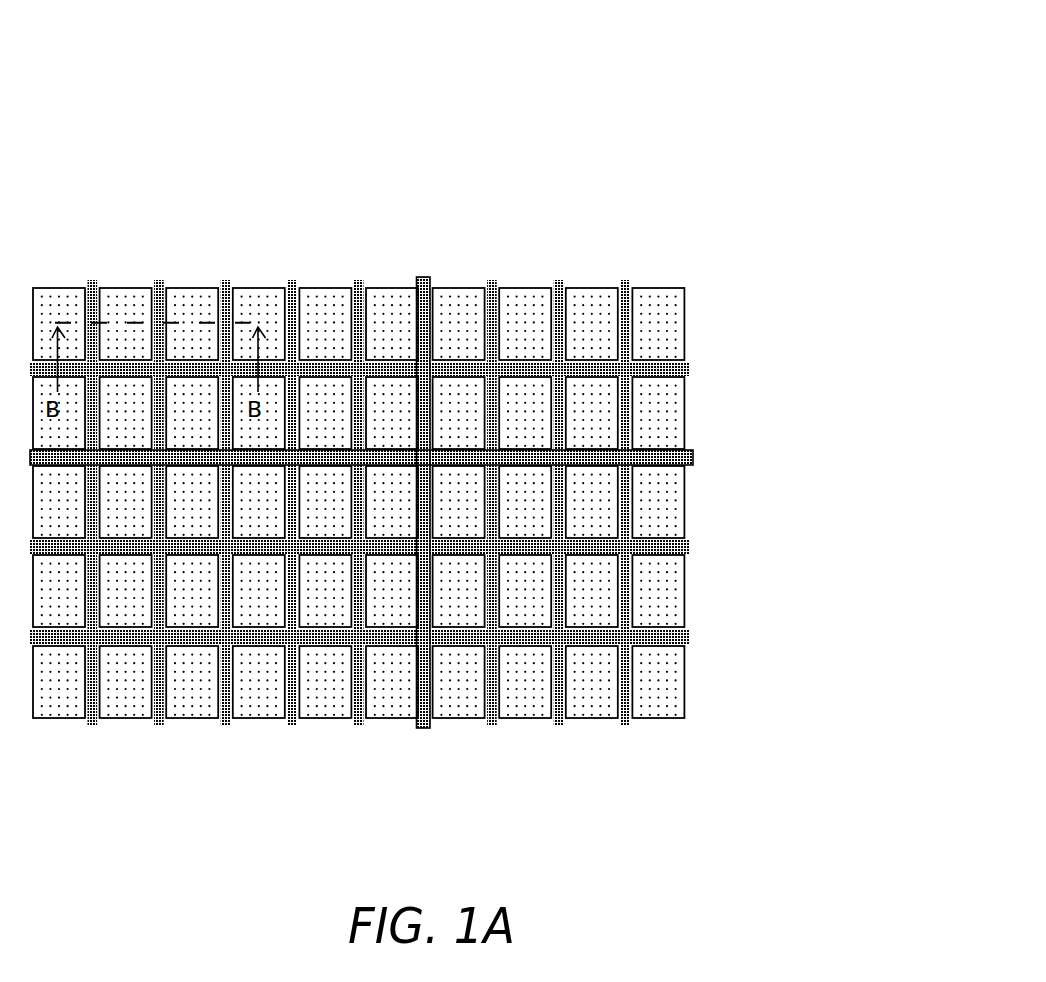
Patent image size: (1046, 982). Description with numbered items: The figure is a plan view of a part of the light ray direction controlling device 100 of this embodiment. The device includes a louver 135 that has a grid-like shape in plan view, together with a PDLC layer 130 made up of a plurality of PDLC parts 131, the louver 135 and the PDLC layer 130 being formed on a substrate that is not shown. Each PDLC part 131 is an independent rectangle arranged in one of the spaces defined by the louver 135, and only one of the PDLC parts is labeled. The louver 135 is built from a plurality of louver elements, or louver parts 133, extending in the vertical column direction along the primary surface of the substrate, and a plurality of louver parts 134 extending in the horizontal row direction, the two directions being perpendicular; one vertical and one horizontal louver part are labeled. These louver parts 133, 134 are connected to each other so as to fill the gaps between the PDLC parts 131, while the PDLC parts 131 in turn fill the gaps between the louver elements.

The light ray direction controlling device 100 is at (352, 102).
The PDLC layer 130 is at (685, 720).
The PDLC part 131 is at (262, 720).
The louver element (louver part) 133 is at (427, 276).
The louver element (louver part) 134 is at (698, 452).
The louver 135 is at (462, 382).